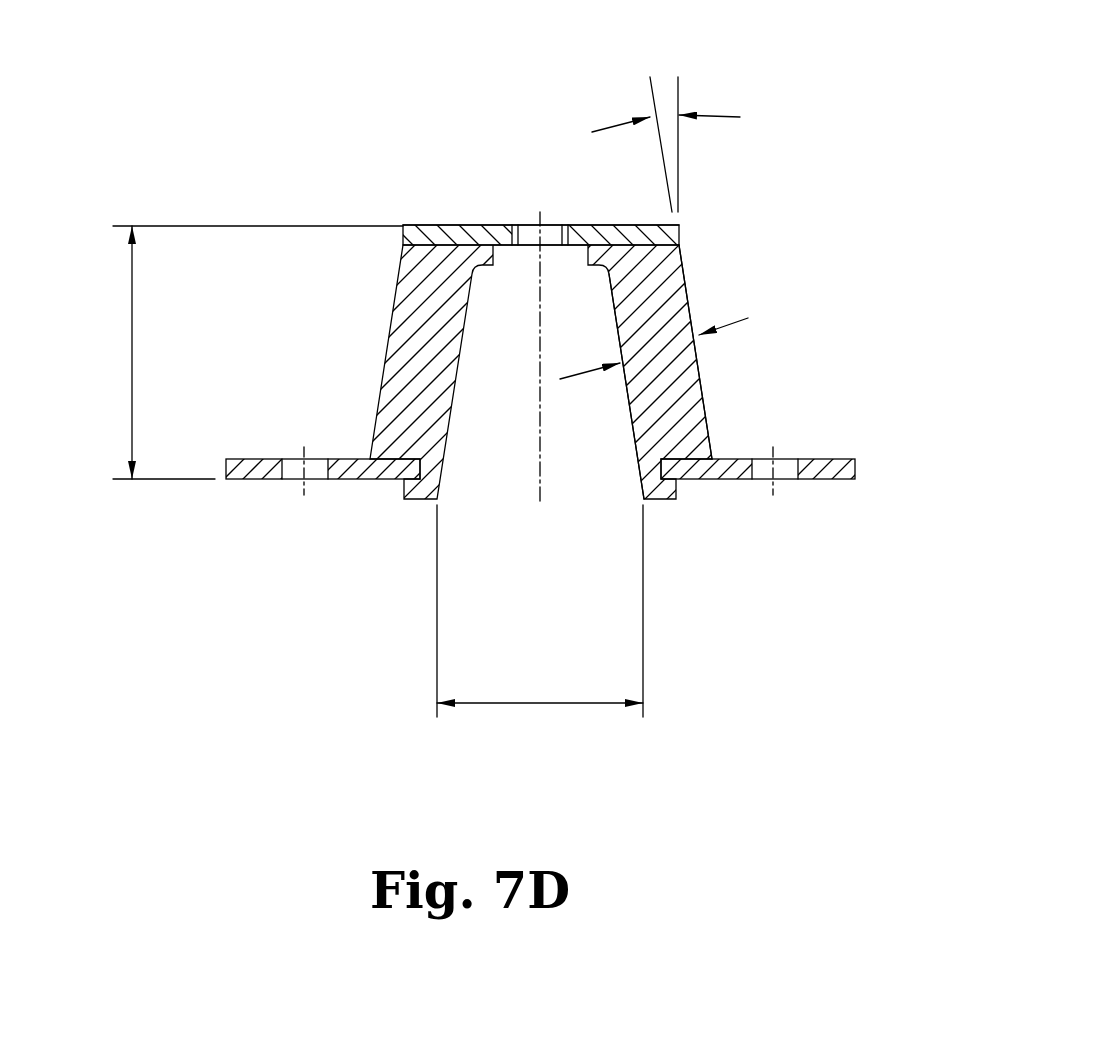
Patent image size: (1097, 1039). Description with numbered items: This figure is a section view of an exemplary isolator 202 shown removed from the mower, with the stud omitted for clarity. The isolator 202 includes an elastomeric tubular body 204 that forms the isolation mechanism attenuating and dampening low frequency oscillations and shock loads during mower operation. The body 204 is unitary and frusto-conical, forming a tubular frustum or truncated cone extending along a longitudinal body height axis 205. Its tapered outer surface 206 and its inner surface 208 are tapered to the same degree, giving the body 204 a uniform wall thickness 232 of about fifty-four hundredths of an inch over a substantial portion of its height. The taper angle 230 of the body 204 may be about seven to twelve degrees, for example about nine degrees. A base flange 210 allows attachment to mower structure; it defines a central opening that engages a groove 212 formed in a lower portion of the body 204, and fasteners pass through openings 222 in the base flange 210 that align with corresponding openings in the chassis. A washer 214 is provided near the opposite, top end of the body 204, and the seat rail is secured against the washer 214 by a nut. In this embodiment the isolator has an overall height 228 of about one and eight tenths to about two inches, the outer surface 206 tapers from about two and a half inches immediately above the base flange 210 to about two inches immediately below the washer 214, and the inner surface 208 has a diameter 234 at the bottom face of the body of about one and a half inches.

The isolator 202 is at (412, 226).
The elastomeric tubular body 204 is at (385, 350).
The body height axis 205 is at (538, 312).
The tapered outer surface 206 is at (707, 420).
The inner surface 208 is at (631, 442).
The base flange 210 is at (250, 480).
The groove 212 is at (668, 473).
The washer 214 is at (403, 228).
The openings 222 is at (293, 458).
The overall height 228 is at (130, 360).
The taper angle 230 is at (717, 112).
The wall thickness 232 is at (738, 318).
The diameter 234 is at (525, 704).